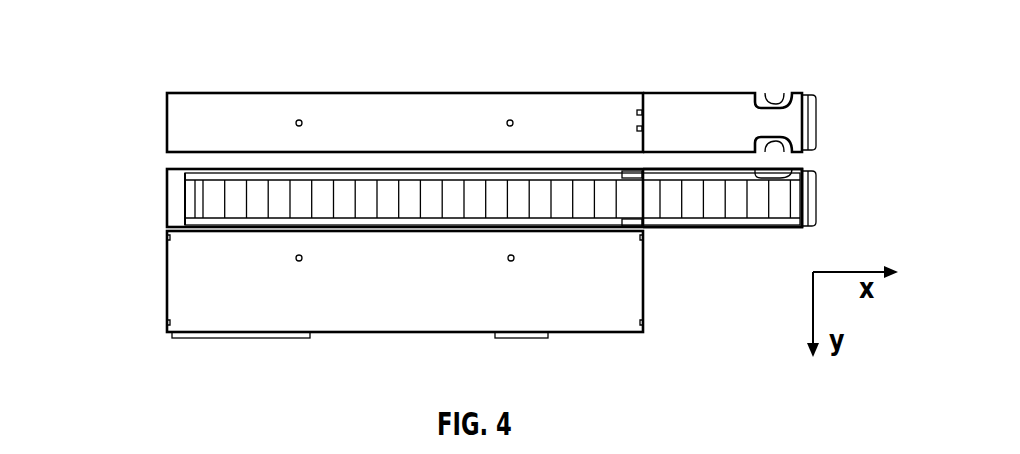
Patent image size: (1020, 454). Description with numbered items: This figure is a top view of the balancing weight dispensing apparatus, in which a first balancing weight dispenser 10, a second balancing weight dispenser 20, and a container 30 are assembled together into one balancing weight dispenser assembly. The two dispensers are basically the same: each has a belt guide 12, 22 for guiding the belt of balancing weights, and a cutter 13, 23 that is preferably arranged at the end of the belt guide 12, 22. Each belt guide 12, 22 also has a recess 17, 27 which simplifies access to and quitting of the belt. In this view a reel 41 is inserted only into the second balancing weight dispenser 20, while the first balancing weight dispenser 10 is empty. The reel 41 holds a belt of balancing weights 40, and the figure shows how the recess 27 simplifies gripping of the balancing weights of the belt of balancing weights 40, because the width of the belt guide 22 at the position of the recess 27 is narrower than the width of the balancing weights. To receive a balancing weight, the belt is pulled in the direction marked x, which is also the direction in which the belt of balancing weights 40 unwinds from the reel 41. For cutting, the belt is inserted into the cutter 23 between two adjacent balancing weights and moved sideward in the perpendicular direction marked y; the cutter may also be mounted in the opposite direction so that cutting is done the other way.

The first balancing weight dispenser 10 is at (138, 125).
The belt guide 12 is at (693, 113).
The cutter 13 is at (815, 100).
The recess 17 is at (770, 103).
The second balancing weight dispenser 20 is at (138, 180).
The belt guide 22 is at (685, 222).
The cutter 23 is at (815, 178).
The recess 27 is at (773, 172).
The container 30 is at (138, 281).
The belt of balancing weights 40 is at (728, 212).
The reel 41 is at (186, 222).